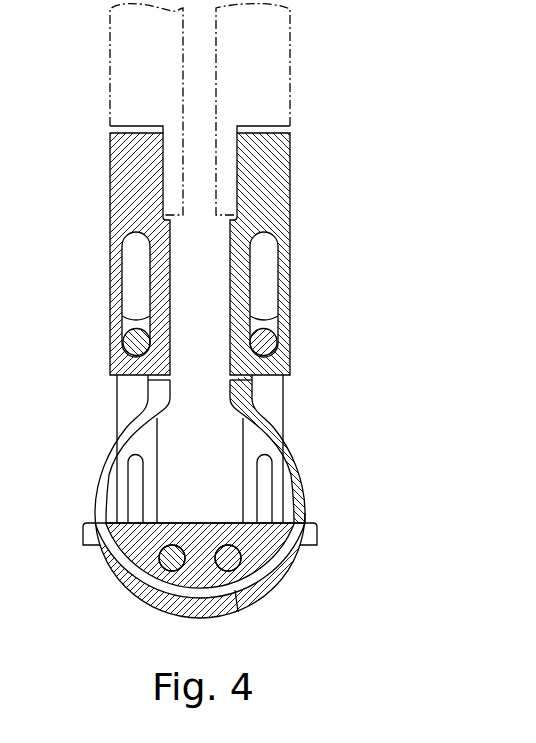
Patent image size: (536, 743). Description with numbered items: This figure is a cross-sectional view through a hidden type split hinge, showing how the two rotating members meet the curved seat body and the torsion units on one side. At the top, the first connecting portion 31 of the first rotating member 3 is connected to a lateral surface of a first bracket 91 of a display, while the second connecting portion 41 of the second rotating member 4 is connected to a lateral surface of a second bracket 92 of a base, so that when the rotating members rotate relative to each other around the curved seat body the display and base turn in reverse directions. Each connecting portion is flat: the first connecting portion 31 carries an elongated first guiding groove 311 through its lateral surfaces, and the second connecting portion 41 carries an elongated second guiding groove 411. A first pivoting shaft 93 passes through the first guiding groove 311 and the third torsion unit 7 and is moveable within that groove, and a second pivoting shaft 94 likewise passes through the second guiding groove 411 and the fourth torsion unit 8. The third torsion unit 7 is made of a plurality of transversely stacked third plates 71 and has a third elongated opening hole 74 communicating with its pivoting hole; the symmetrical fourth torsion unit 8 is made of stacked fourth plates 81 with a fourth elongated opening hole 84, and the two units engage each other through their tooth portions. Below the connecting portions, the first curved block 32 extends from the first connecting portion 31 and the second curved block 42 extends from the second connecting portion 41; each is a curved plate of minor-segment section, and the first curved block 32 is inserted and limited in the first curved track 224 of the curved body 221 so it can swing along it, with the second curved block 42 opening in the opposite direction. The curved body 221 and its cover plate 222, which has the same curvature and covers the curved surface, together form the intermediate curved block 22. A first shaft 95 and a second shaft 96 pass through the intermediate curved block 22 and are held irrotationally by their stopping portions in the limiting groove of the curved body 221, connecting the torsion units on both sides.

The second bracket 92 is at (127, 68).
The first bracket 91 is at (273, 68).
The second rotating member 4 is at (105, 254).
The first rotating member 3 is at (293, 254).
The second connecting portion 41 is at (125, 205).
The first connecting portion 31 is at (277, 205).
The second guiding groove 411 is at (131, 268).
The first guiding groove 311 is at (269, 268).
The second pivoting shaft 94 is at (133, 340).
The first pivoting shaft 93 is at (267, 340).
The fourth torsion unit 8 is at (103, 439).
The third torsion unit 7 is at (294, 439).
The fourth plates 81 is at (96, 449).
The third plates 71 is at (301, 449).
The second curved block 42 is at (100, 466).
The first curved block 32 is at (298, 466).
The fourth elongated opening hole 84 is at (137, 490).
The third elongated opening hole 74 is at (263, 490).
The intermediate curved block 22 is at (247, 578).
The curved body 221 is at (222, 573).
The cover plate 222 is at (287, 573).
The first curved track 224 is at (170, 600).
The second shaft 96 is at (170, 565).
The first shaft 95 is at (232, 572).